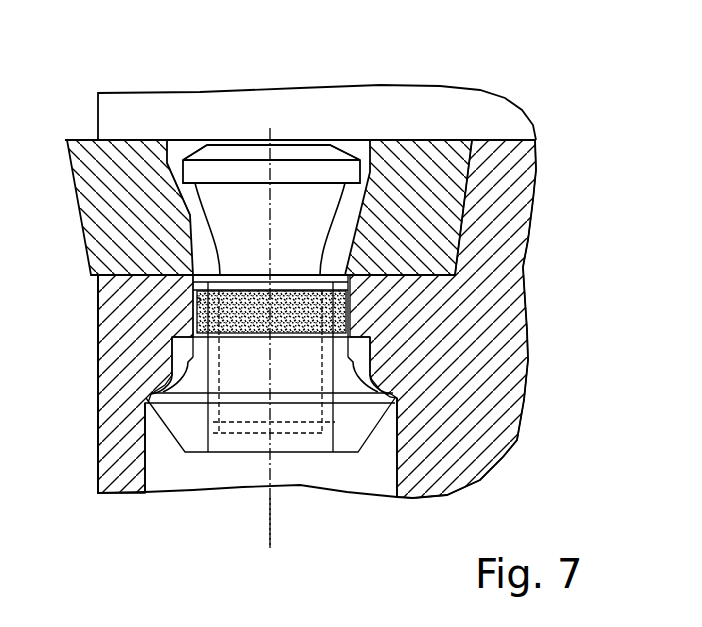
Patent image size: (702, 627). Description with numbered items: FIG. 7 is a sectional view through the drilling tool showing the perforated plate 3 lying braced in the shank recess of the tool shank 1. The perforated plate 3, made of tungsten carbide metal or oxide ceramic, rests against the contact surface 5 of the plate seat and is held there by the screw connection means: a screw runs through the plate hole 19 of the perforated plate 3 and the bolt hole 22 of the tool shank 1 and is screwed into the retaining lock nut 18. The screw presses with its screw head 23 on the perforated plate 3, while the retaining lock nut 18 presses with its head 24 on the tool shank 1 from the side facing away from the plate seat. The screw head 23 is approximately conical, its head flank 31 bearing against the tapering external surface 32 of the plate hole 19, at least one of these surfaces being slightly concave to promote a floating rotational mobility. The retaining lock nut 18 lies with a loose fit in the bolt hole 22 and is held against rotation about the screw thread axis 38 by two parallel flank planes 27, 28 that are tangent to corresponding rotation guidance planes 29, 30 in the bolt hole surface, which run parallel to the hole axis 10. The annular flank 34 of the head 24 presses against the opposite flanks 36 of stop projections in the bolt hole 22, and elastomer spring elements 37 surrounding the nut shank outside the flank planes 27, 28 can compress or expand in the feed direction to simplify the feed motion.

The tool shank 1 is at (466, 410).
The perforated plate 3 is at (123, 134).
The contact surface 5 is at (397, 265).
The hole axis 10 is at (268, 213).
The retaining lock nut 18 is at (339, 456).
The plate hole 19 is at (345, 258).
The bolt hole 22 is at (160, 391).
The screw head 23 is at (302, 210).
The head 24 is at (188, 420).
The flank plane 27 is at (355, 325).
The flank plane 28 is at (200, 318).
The rotation guidance plane 29 is at (353, 300).
The rotation guidance plane 30 is at (197, 296).
The head flank 31 is at (193, 233).
The external surface 32 is at (190, 172).
The annular flank 34 is at (385, 360).
The opposite flank 36 is at (373, 385).
The spring element 37 is at (238, 300).
The screw thread axis 38 is at (268, 503).